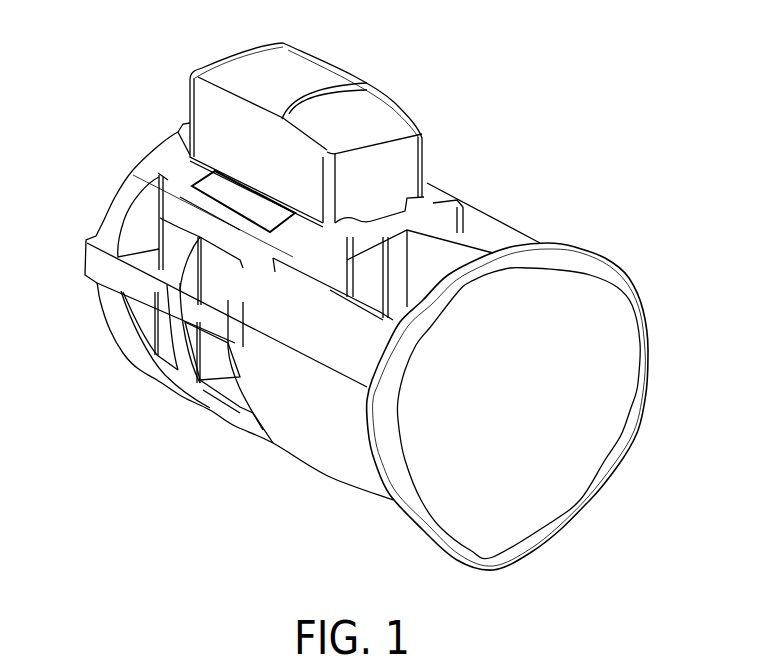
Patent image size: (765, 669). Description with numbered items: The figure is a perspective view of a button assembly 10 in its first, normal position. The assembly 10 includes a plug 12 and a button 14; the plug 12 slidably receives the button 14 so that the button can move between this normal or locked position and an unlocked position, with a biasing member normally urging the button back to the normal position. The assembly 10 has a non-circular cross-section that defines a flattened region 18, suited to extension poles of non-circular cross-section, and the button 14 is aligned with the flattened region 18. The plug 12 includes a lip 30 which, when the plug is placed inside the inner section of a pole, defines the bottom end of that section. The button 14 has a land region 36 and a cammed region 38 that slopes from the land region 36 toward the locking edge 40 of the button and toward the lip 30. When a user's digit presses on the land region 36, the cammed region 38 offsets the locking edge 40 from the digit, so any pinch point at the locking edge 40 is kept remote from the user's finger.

The button assembly 10 is at (632, 125).
The plug 12 is at (116, 213).
The button 14 is at (227, 133).
The flattened region 18 is at (291, 226).
The lip 30 is at (620, 273).
The land region 36 is at (305, 67).
The cammed region 38 is at (373, 110).
The locking edge 40 is at (408, 143).